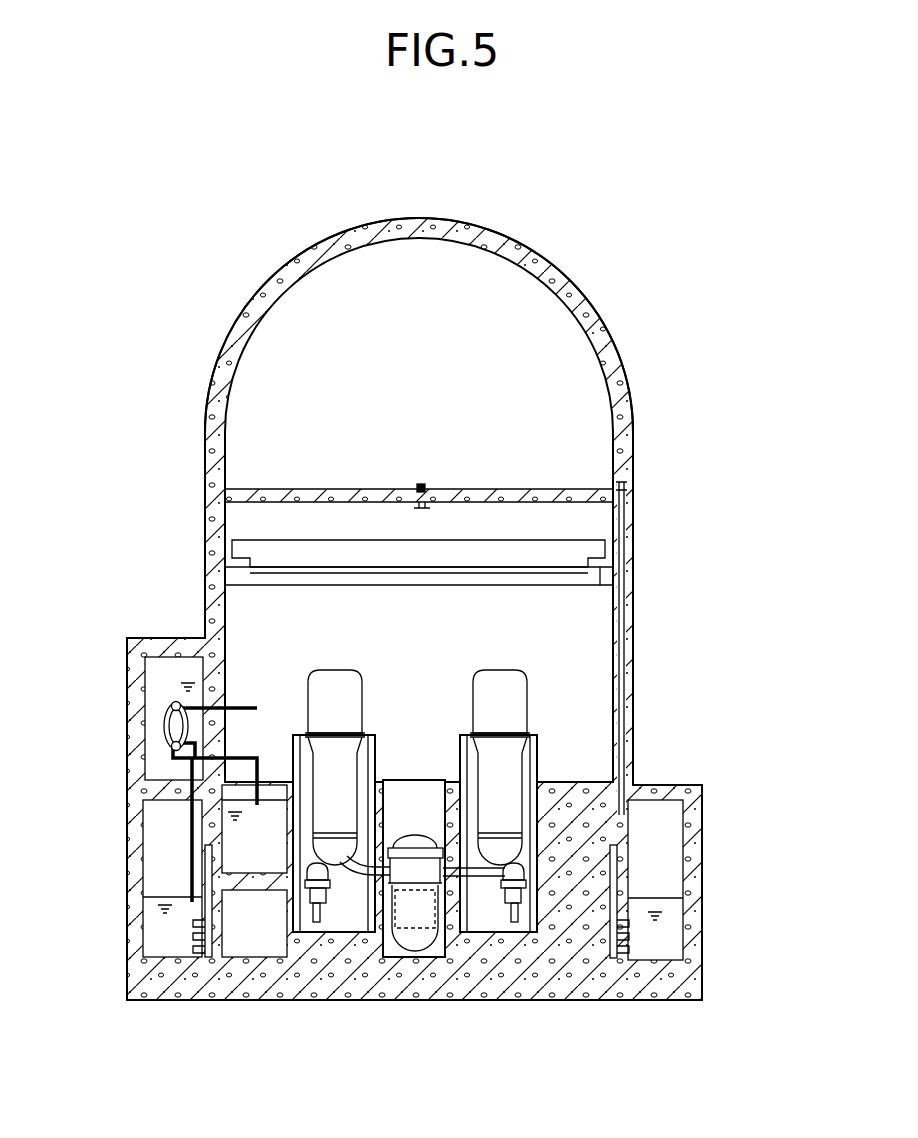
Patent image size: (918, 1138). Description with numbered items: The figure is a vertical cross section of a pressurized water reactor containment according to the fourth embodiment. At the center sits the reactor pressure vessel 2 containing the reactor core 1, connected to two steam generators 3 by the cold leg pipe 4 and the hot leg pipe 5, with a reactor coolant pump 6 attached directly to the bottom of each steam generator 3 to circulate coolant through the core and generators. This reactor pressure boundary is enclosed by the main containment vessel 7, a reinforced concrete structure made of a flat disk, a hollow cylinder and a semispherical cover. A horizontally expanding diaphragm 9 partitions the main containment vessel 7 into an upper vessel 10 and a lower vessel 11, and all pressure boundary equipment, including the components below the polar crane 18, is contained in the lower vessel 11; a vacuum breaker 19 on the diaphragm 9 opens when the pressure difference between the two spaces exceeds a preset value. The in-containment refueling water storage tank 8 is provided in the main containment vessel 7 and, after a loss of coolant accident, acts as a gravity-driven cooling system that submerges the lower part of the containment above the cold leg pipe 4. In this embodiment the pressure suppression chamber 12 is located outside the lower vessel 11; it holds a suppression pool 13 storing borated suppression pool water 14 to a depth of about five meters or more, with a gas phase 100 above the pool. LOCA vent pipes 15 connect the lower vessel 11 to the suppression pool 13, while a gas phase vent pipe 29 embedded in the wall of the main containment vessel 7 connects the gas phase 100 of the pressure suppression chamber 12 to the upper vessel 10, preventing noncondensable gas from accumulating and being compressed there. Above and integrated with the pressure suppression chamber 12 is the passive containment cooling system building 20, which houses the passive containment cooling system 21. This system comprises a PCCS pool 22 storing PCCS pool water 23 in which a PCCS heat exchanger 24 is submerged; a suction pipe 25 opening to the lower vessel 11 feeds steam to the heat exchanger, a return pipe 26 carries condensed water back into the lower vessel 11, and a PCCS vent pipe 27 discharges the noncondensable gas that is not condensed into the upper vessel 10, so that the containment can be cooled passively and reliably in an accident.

The reactor core 1 is at (423, 932).
The reactor pressure vessel 2 is at (405, 935).
The steam generators 3 is at (333, 673).
The cold leg pipe 4 is at (480, 878).
The hot leg pipe 5 is at (380, 876).
The reactor coolant pump 6 is at (317, 923).
The main containment vessel 7 is at (633, 442).
The in-containment refueling water storage tank 8 is at (215, 843).
The diaphragm 9 is at (483, 489).
The upper vessel 10 is at (567, 337).
The lower vessel 11 is at (600, 695).
The pressure suppression chamber 12 is at (157, 872).
The suppression pool 13 is at (137, 918).
The suppression pool water 14 is at (672, 925).
The LOCA vent pipes 15 is at (200, 915).
The polar crane 18 is at (572, 550).
The vacuum breaker 19 is at (420, 486).
The passive containment cooling system building 20 is at (160, 640).
The passive containment cooling system 21 is at (160, 698).
The PCCS pool 22 is at (145, 703).
The PCCS pool water 23 is at (153, 718).
The PCCS heat exchanger 24 is at (160, 732).
The suction pipe 25 is at (241, 705).
The return pipe 26 is at (262, 795).
The PCCS vent pipe 27 is at (190, 815).
The gas phase vent pipe 29 is at (625, 655).
The gas phase 100 is at (668, 828).